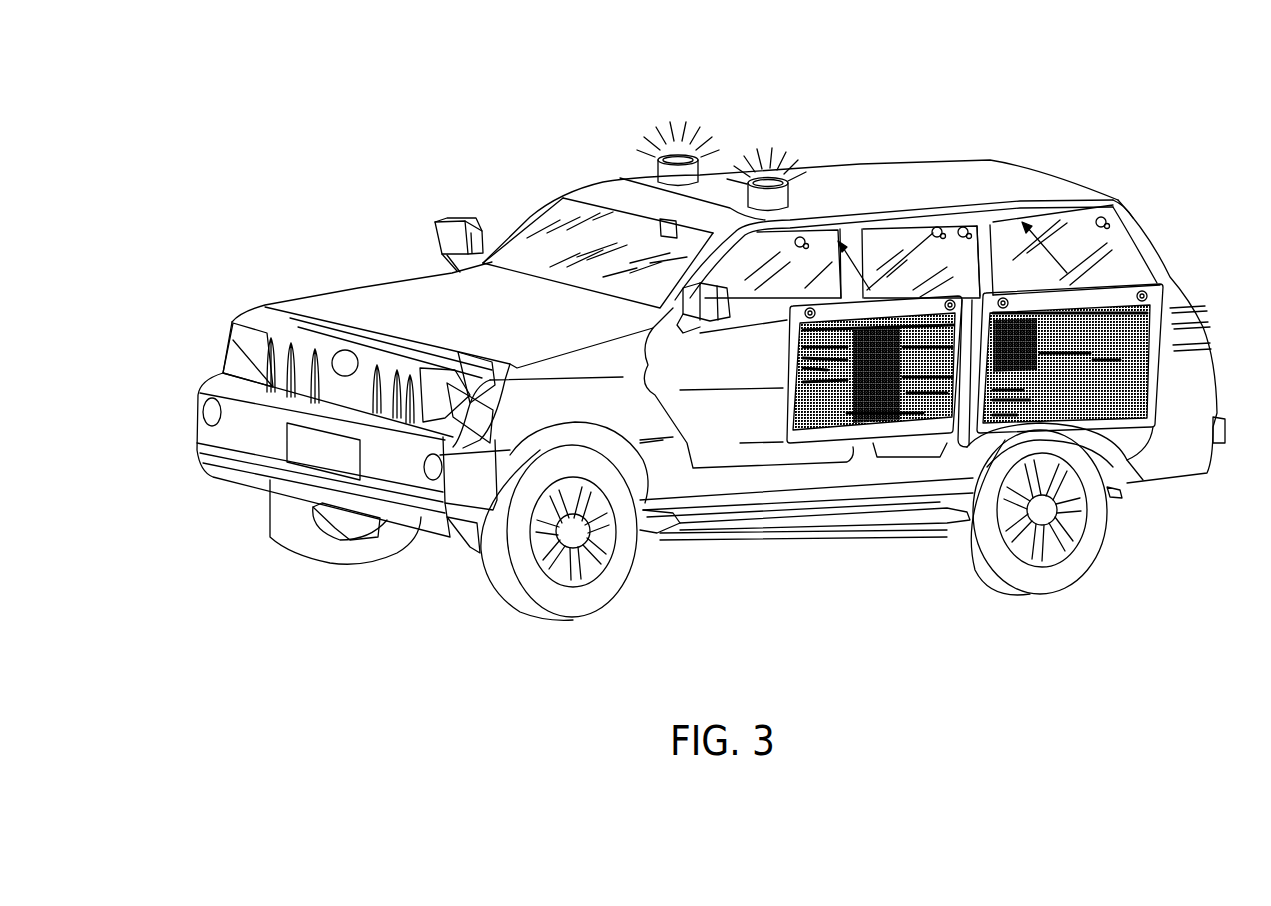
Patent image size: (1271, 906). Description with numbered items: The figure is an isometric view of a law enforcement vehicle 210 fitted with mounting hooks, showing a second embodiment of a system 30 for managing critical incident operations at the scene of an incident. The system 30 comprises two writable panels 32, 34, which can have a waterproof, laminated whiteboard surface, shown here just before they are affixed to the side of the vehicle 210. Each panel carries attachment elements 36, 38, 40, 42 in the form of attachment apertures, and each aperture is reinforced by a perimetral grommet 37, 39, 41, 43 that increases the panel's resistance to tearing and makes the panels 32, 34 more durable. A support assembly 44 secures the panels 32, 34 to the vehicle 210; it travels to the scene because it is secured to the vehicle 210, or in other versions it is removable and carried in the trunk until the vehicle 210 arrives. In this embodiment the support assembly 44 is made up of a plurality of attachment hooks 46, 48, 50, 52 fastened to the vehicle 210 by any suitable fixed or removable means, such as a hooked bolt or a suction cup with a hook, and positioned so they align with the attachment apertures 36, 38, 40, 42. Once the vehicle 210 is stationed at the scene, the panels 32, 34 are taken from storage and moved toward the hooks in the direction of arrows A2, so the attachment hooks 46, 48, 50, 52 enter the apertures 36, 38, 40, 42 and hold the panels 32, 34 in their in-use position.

The system 30 is at (1043, 58).
The law enforcement vehicle 210 is at (356, 292).
The panel 32 is at (830, 440).
The panel 34 is at (1125, 433).
The attachment element 36 is at (787, 393).
The perimetral grommet 37 is at (803, 315).
The attachment element 38 is at (938, 438).
The perimetral grommet 39 is at (949, 298).
The attachment element 40 is at (1005, 300).
The perimetral grommet 41 is at (1020, 308).
The attachment element 42 is at (1167, 290).
The perimetral grommet 43 is at (1147, 294).
The support assembly 44 is at (1130, 216).
The attachment hook 46 is at (805, 238).
The attachment hook 48 is at (962, 225).
The attachment hook 50 is at (975, 226).
The attachment hook 52 is at (1104, 220).
The arrows A2 is at (870, 270).